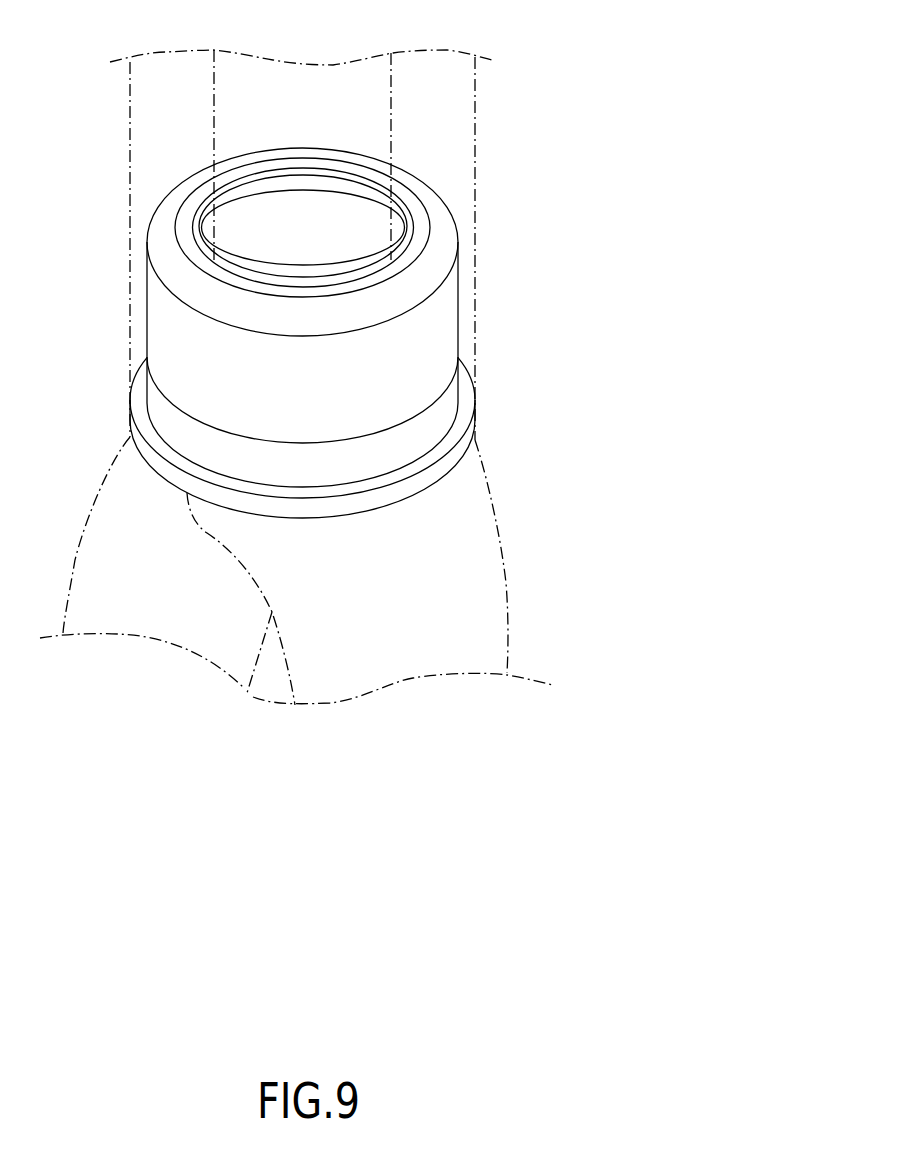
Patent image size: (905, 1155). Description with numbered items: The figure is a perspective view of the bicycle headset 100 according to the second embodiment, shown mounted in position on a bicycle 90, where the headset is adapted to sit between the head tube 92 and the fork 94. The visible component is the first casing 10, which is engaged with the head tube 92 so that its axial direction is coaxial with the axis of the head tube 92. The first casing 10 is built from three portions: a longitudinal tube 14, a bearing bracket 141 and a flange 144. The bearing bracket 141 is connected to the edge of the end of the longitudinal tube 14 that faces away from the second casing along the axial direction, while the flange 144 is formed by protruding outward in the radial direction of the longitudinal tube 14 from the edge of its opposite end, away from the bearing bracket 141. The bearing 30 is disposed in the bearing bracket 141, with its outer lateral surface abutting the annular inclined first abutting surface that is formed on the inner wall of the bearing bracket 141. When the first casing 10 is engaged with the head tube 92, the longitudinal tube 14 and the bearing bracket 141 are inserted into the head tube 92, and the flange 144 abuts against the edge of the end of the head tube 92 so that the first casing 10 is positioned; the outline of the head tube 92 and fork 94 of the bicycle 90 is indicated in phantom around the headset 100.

The first casing 10 is at (459, 332).
The longitudinal tube 14 is at (459, 297).
The bearing bracket 141 is at (443, 233).
The flange 144 is at (423, 484).
The bearing 30 is at (403, 222).
The bicycle 90 is at (492, 117).
The head tube 92 is at (130, 146).
The fork 94 is at (393, 96).
The bicycle headset 100 is at (150, 200).